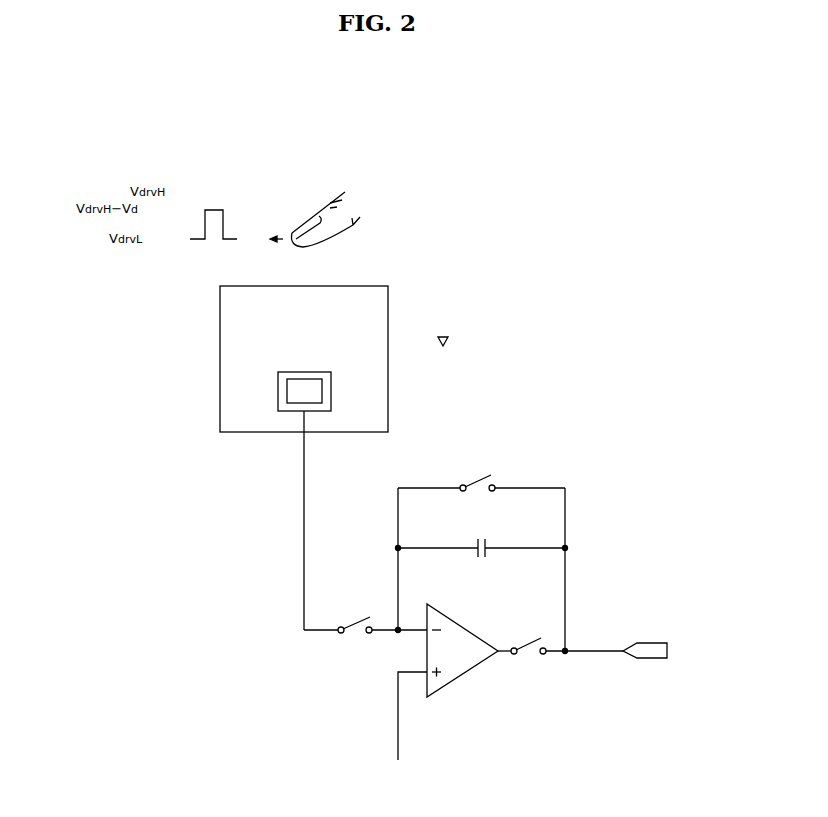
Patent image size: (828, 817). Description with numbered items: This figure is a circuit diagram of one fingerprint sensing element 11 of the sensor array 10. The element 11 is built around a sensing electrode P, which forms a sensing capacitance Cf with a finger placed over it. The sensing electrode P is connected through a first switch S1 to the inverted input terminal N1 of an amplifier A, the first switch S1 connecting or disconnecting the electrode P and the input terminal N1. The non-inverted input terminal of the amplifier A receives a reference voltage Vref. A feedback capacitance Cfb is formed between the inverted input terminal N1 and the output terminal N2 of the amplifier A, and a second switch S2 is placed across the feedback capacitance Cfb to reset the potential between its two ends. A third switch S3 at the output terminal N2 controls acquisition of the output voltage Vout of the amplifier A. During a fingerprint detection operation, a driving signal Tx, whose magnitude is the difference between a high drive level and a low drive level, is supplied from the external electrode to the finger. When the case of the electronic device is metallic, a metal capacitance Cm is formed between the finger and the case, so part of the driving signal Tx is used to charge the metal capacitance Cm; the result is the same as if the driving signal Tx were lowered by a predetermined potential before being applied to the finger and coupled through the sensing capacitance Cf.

The sensor array 10 is at (240, 383).
The fingerprint sensing element 11 is at (341, 382).
The sensing electrode P is at (288, 404).
The driving signal Tx is at (200, 226).
The sensing capacitance Cf is at (325, 231).
The metal capacitance Cm is at (461, 300).
The first switch S1 is at (355, 614).
The second switch S2 is at (477, 475).
The third switch S3 is at (528, 636).
The inverted input terminal N1 is at (397, 641).
The output terminal N2 is at (565, 663).
The amplifier A is at (462, 650).
The feedback capacitance Cfb is at (482, 558).
The reference voltage Vref is at (405, 728).
The output voltage Vout is at (619, 644).